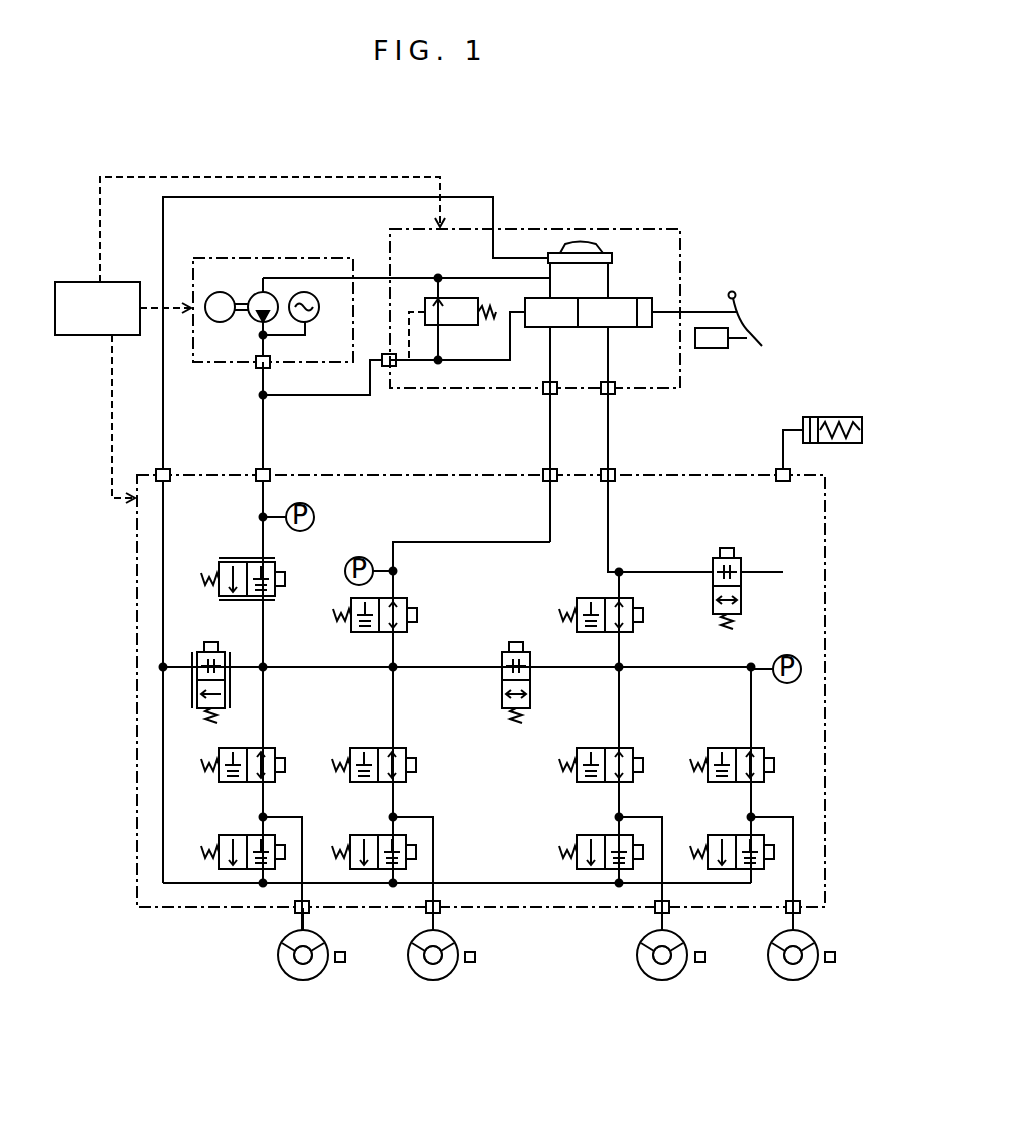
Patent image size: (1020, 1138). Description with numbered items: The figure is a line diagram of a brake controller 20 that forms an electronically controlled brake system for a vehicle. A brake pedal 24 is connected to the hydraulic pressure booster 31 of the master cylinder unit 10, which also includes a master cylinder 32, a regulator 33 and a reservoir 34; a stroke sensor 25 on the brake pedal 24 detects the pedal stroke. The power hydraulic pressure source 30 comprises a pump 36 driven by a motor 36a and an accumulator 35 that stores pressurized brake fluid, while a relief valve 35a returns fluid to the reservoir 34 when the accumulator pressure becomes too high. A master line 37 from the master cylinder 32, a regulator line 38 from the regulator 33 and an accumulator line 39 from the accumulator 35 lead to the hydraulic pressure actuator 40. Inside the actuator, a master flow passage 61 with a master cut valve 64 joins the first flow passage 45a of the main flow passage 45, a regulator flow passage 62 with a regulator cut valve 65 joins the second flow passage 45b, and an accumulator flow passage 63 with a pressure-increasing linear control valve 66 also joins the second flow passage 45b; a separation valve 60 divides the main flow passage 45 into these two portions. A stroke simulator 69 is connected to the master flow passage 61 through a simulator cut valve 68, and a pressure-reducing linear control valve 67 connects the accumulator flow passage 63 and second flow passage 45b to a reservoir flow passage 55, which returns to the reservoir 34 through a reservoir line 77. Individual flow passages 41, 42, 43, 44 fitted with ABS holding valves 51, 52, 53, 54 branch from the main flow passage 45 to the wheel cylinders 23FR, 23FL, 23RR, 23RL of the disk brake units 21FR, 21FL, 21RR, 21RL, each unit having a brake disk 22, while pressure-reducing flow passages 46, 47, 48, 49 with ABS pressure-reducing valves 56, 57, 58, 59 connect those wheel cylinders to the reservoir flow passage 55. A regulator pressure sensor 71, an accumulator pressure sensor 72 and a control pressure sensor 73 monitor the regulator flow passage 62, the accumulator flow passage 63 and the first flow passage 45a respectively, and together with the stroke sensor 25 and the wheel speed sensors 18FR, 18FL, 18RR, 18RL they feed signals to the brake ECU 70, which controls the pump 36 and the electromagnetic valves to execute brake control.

The brake ECU 70 is at (72, 282).
The power hydraulic pressure source 30 is at (285, 258).
The motor 36a is at (222, 292).
The pump 36 is at (258, 320).
The accumulator 35 is at (305, 322).
The relief valve 35a is at (455, 325).
The master cylinder unit 10 is at (638, 229).
The reservoir 34 is at (580, 242).
The regulator 33 is at (538, 327).
The master cylinder 32 is at (592, 327).
The hydraulic pressure booster 31 is at (644, 298).
The brake controller 20 is at (710, 205).
The brake pedal 24 is at (762, 342).
The stroke sensor 25 is at (712, 348).
The stroke simulator 69 is at (832, 417).
The hydraulic pressure actuator 40 is at (812, 477).
The reservoir line 77 is at (165, 418).
The accumulator line 39 is at (265, 437).
The regulator line 38 is at (548, 435).
The master line 37 is at (606, 435).
The regulator flow passage 62 is at (462, 542).
The master flow passage 61 is at (606, 557).
The accumulator pressure sensor 72 is at (306, 506).
The regulator pressure sensor 71 is at (356, 557).
The control pressure sensor 73 is at (777, 660).
The pressure-increasing linear control valve 66 is at (276, 590).
The regulator cut valve 65 is at (410, 607).
The master cut valve 64 is at (640, 610).
The simulator cut valve 68 is at (745, 607).
The pressure-reducing linear control valve 67 is at (204, 652).
The separation valve 60 is at (532, 705).
The accumulator flow passage 63 is at (265, 643).
The main flow passage 45 is at (672, 664).
The first flow passage 45a is at (640, 668).
The second flow passage 45b is at (298, 668).
The individual flow passage 43 is at (302, 815).
The individual flow passage 44 is at (433, 815).
The individual flow passage 41 is at (662, 815).
The individual flow passage 42 is at (793, 815).
The ABS holding valve 53 is at (270, 749).
The ABS holding valve 54 is at (400, 749).
The ABS holding valve 51 is at (628, 749).
The ABS holding valve 52 is at (758, 749).
The pressure-reducing flow passage 48 is at (258, 826).
The pressure-reducing flow passage 49 is at (389, 826).
The pressure-reducing flow passage 46 is at (615, 826).
The pressure-reducing flow passage 47 is at (746, 826).
The ABS pressure-reducing valve 58 is at (219, 840).
The ABS pressure-reducing valve 59 is at (350, 840).
The ABS pressure-reducing valve 56 is at (577, 840).
The ABS pressure-reducing valve 57 is at (708, 840).
The reservoir flow passage 55 is at (182, 882).
The disk brake unit 21RR is at (280, 968).
The disk brake unit 21RL is at (410, 968).
The disk brake unit 21FR is at (640, 968).
The disk brake unit 21FL is at (770, 968).
The brake disk 22 is at (300, 980).
The wheel cylinder 23RR is at (283, 942).
The wheel cylinder 23RL is at (453, 942).
The wheel cylinder 23FR is at (642, 942).
The wheel cylinder 23FL is at (810, 936).
The wheel speed sensor 18RR is at (356, 940).
The wheel speed sensor 18RL is at (470, 962).
The wheel speed sensor 18FR is at (716, 940).
The wheel speed sensor 18FL is at (830, 962).